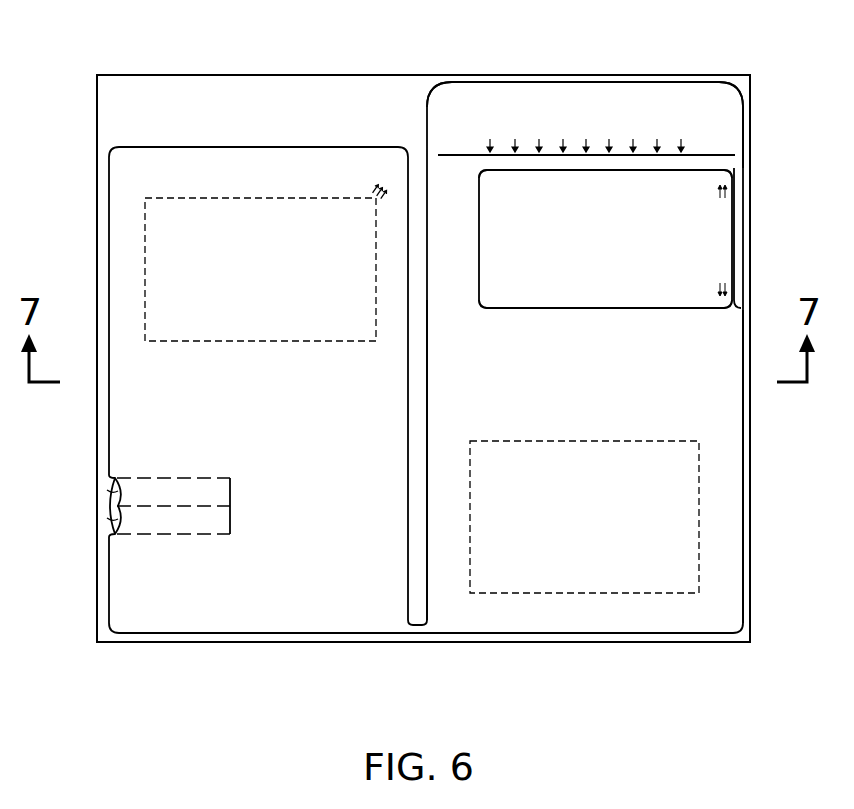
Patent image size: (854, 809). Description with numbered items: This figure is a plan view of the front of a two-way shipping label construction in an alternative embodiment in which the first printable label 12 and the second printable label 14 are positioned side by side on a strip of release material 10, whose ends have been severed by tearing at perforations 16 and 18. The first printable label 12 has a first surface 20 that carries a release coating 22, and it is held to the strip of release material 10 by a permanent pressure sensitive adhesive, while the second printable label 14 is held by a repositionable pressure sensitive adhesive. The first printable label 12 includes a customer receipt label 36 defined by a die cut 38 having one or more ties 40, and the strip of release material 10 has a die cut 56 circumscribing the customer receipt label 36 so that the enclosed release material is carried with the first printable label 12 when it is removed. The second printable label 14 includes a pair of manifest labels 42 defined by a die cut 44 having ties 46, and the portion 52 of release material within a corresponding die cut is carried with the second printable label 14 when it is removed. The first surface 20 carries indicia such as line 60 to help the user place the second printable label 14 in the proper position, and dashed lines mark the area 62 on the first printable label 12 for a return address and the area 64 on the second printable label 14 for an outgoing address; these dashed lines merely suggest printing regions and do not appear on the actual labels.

The strip of release material 10 is at (97, 449).
The first printable label 12 is at (559, 424).
The second printable label 14 is at (245, 386).
The perforation 16 is at (231, 74).
The perforation 18 is at (482, 643).
The first surface 20 is at (733, 424).
The release coating 22 is at (255, 617).
The customer receipt label 36 is at (695, 281).
The die cut 38 is at (578, 308).
The ties 40 is at (493, 175).
The manifest labels 42 is at (109, 478).
The die cut 44 is at (195, 477).
The ties 46 is at (232, 492).
The portion of release material 52 is at (125, 477).
The die cut 56 is at (743, 183).
The line 60 is at (718, 155).
The area 62 is at (699, 520).
The area 64 is at (145, 232).